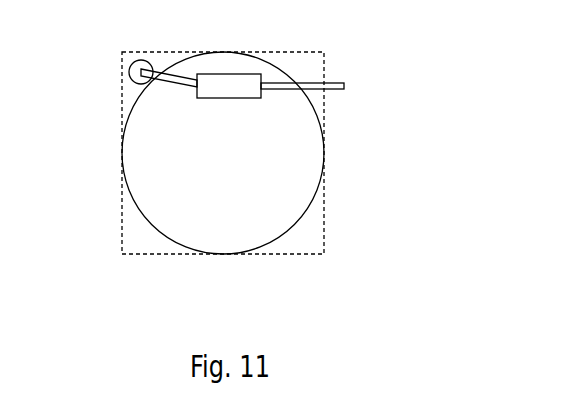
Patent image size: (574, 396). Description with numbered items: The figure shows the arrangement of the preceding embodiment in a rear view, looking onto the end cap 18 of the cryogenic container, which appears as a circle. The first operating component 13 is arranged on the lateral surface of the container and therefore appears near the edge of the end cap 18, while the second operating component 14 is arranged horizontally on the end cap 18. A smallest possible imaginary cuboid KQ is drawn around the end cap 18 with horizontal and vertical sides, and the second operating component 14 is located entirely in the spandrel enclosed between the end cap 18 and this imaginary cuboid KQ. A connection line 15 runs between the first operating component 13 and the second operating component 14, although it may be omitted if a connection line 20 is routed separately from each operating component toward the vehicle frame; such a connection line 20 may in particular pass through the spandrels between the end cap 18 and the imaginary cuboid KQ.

The first operating component 13 is at (137, 61).
The second operating component 14 is at (229, 80).
The connection line 15 is at (176, 75).
The end cap 18 is at (312, 167).
The connection line 20 is at (328, 84).
The imaginary cuboid KQ is at (325, 233).